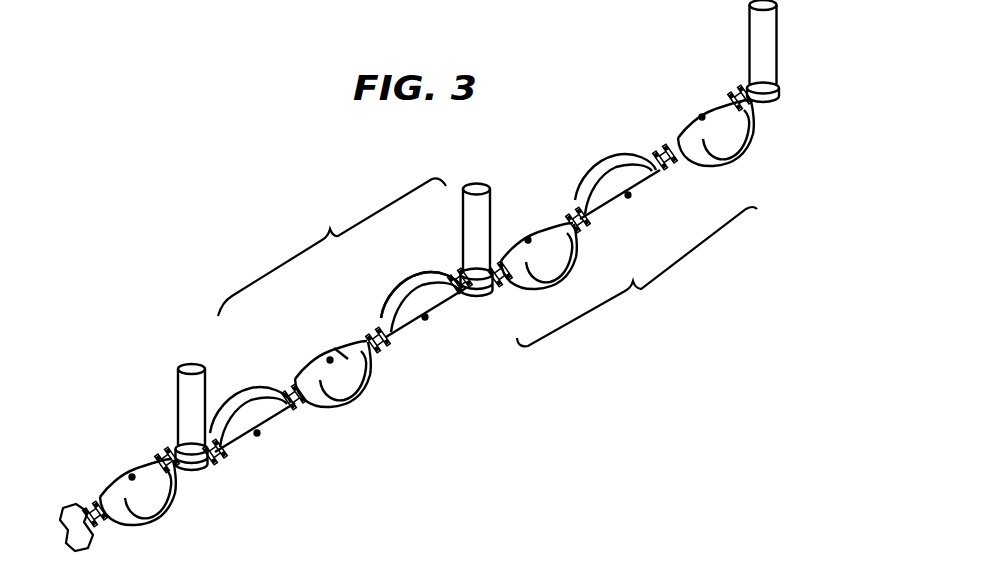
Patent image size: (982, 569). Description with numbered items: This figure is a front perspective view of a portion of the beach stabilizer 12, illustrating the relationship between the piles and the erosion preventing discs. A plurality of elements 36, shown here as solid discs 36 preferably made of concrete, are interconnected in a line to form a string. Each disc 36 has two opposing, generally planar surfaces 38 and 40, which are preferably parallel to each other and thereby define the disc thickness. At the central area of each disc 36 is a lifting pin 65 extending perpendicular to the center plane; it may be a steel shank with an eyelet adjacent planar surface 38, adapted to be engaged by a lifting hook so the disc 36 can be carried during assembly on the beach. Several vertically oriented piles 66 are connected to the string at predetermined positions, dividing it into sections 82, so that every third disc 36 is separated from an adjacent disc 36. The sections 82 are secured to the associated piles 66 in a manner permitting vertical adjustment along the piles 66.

The floating boom 12 is at (260, 141).
The element (disc) 36 is at (160, 508).
The planar surface 38 is at (410, 320).
The planar surface 40 is at (344, 358).
The lifting pin 65 is at (257, 430).
The pile 66 is at (182, 398).
The section 82 is at (487, 262).